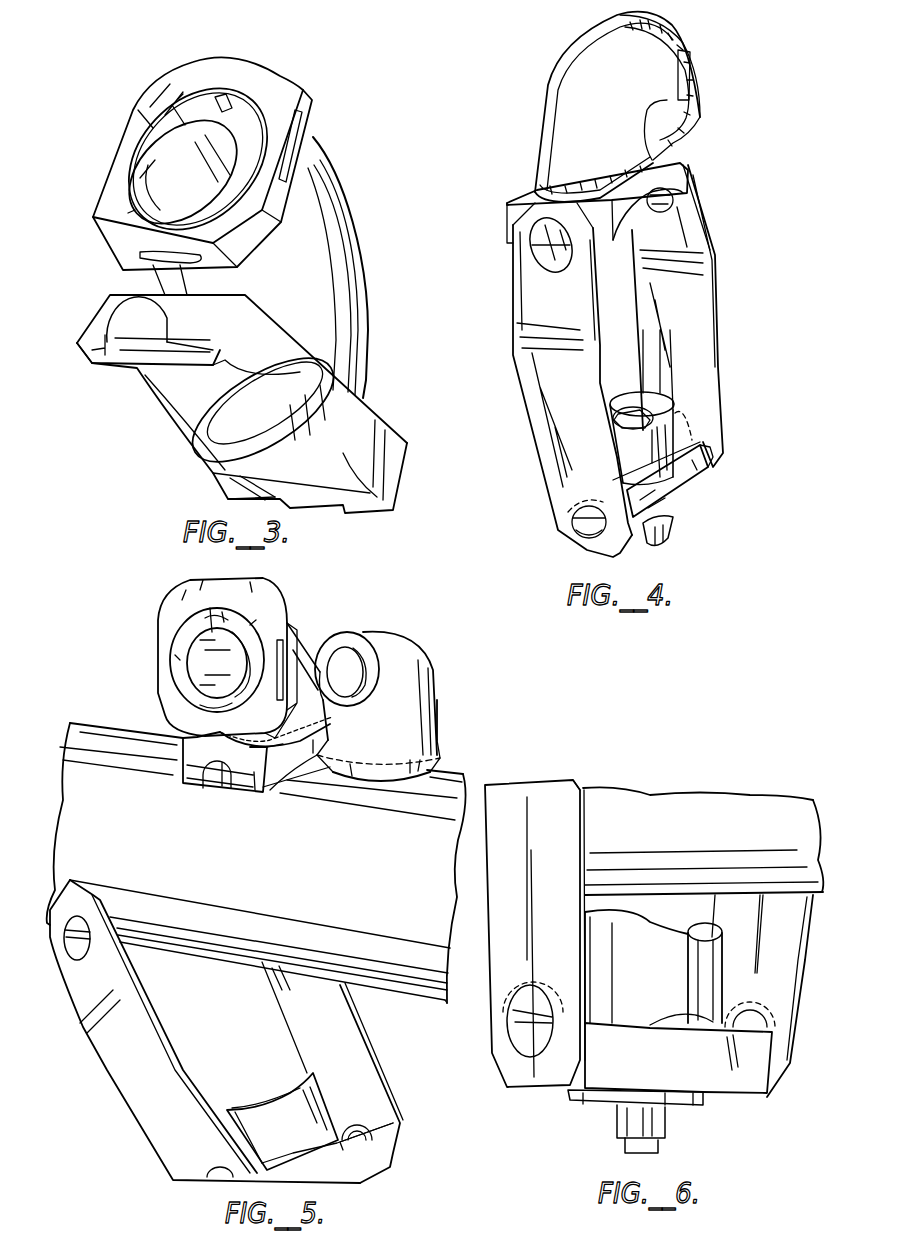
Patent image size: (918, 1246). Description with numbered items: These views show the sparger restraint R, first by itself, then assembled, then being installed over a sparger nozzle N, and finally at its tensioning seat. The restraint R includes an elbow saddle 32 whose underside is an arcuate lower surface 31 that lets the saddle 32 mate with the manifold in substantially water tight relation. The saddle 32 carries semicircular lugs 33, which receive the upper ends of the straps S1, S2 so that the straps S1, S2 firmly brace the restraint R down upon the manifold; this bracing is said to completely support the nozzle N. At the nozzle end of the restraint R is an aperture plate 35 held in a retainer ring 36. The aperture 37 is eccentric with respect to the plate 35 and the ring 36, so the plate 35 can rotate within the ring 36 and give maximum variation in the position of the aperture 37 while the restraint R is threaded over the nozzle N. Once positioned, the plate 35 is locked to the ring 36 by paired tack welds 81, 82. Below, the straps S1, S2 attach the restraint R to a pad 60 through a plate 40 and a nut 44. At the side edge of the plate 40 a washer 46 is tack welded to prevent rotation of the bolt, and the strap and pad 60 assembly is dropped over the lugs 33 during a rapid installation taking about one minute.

In FIG. 3, the arcuate lower surface 31 is at (393, 497).
In FIG. 3, the saddle 32 is at (258, 344).
In FIG. 5, the lugs 33 is at (210, 780).
In FIG. 3, the aperture plate 35 is at (213, 108).
In FIG. 5, the aperture plate 35 is at (180, 648).
In FIG. 3, the retainer ring 36 is at (265, 70).
In FIG. 5, the retainer ring 36 is at (187, 597).
In FIG. 3, the aperture 37 is at (153, 175).
In FIG. 4, the plate 40 is at (692, 473).
In FIG. 6, the plate 40 is at (707, 1070).
In FIG. 4, the nut 44 is at (668, 533).
In FIG. 6, the washer 46 is at (680, 1100).
In FIG. 4, the pad 60 is at (660, 447).
In FIG. 5, the pad 60 is at (290, 1127).
In FIG. 6, the pad 60 is at (653, 967).
In FIG. 5, the tack weld 81 is at (218, 617).
In FIG. 5, the tack weld 82 is at (217, 700).
In FIG. 3, the restraint R is at (330, 267).
In FIG. 4, the restraint R is at (580, 157).
In FIG. 5, the restraint R is at (297, 630).
In FIG. 5, the nozzle N is at (200, 663).
In FIG. 4, the strap S1 is at (548, 307).
In FIG. 5, the strap S1 is at (337, 1033).
In FIG. 6, the strap S1 is at (790, 955).
In FIG. 4, the strap S2 is at (687, 296).
In FIG. 5, the strap S2 is at (130, 1082).
In FIG. 6, the strap S2 is at (520, 960).